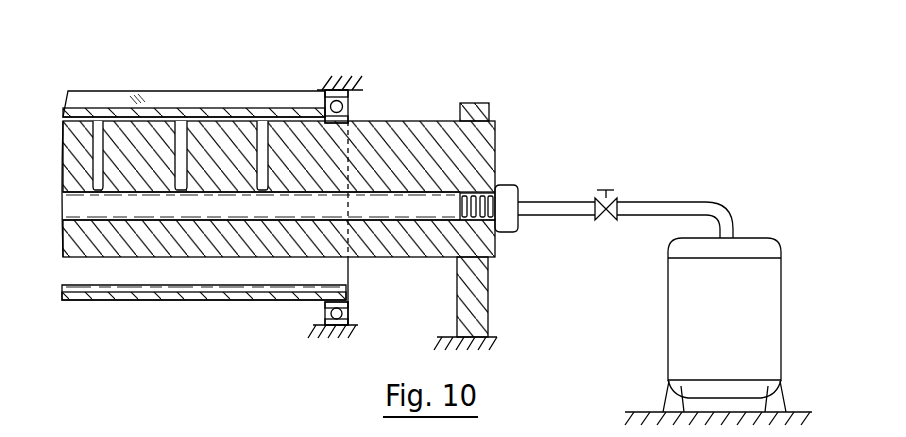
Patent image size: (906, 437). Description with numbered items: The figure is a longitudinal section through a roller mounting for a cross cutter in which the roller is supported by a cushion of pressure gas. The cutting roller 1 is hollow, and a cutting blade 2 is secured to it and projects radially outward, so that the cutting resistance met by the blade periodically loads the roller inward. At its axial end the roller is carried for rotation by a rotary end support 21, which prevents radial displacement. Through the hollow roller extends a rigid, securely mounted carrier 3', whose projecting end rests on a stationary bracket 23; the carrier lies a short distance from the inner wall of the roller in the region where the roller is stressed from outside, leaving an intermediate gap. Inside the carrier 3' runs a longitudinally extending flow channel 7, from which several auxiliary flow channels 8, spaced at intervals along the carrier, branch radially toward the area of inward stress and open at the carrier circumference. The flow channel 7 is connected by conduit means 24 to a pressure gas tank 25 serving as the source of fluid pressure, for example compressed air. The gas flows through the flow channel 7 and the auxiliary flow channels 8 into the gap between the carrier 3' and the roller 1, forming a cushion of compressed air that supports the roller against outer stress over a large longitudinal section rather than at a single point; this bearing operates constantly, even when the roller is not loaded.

The cutting roller 1 is at (252, 298).
The cutting blade 2 is at (277, 97).
The carrier 3' is at (278, 173).
The flow channel 7 is at (75, 205).
The auxiliary flow channel 8 is at (262, 145).
The rotary end support 21 is at (340, 86).
The stationary bracket 23 is at (474, 103).
The conduit means 24 is at (640, 202).
The pressure gas tank 25 is at (781, 304).